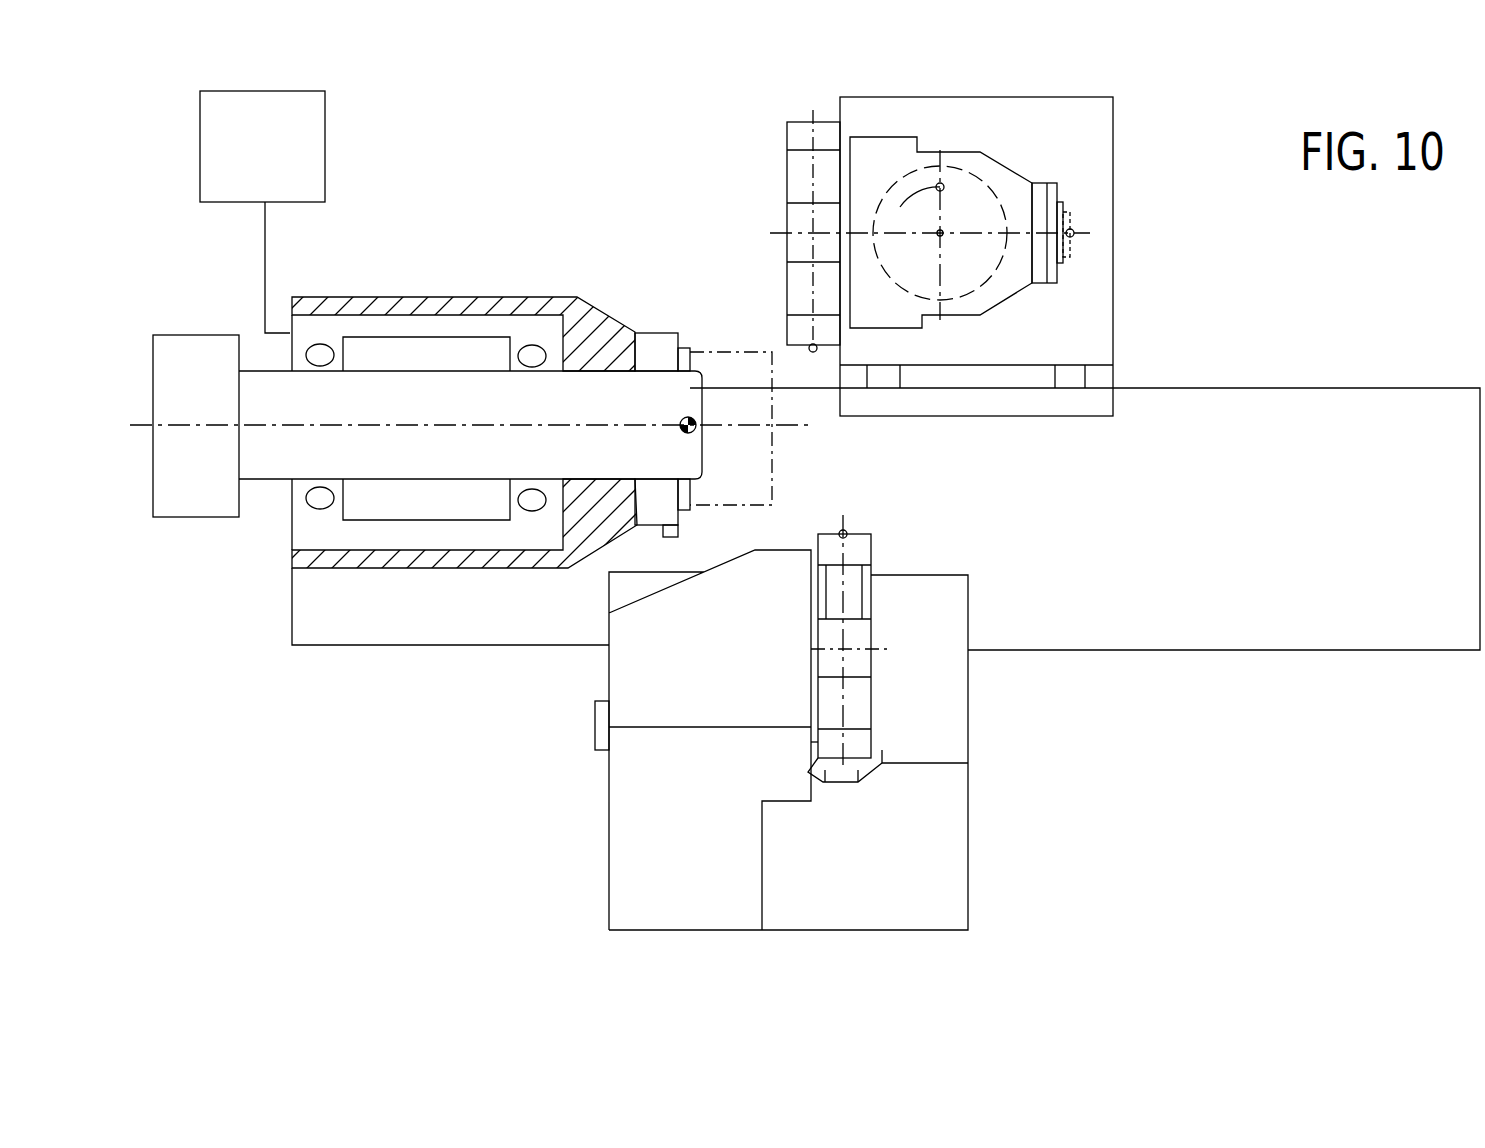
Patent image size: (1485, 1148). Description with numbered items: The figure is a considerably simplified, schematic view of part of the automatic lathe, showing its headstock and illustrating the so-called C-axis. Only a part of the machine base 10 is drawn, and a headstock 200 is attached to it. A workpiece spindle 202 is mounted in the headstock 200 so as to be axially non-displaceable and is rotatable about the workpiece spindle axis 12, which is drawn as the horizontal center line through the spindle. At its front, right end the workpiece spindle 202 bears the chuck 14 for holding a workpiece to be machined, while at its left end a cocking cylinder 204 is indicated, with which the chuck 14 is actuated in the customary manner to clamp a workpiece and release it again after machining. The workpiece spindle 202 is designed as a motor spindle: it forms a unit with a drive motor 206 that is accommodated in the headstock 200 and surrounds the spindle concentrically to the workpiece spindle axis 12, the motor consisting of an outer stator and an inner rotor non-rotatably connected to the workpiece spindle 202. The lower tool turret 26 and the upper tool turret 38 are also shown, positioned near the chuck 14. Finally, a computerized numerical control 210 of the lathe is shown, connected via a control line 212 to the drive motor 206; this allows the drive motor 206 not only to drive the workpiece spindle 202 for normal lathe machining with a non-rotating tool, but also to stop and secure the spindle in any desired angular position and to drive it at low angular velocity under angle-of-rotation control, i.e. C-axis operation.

The machine base 10 is at (1265, 656).
The workpiece spindle axis 12 is at (530, 427).
The chuck 14 is at (777, 477).
The lower tool turret 26 is at (940, 568).
The upper tool turret 38 is at (1117, 178).
The headstock 200 is at (442, 571).
The workpiece spindle 202 is at (270, 484).
The cocking cylinder 204 is at (205, 521).
The drive motor 206 is at (433, 334).
The computerized numerical control 210 is at (329, 137).
The control line 212 is at (265, 238).